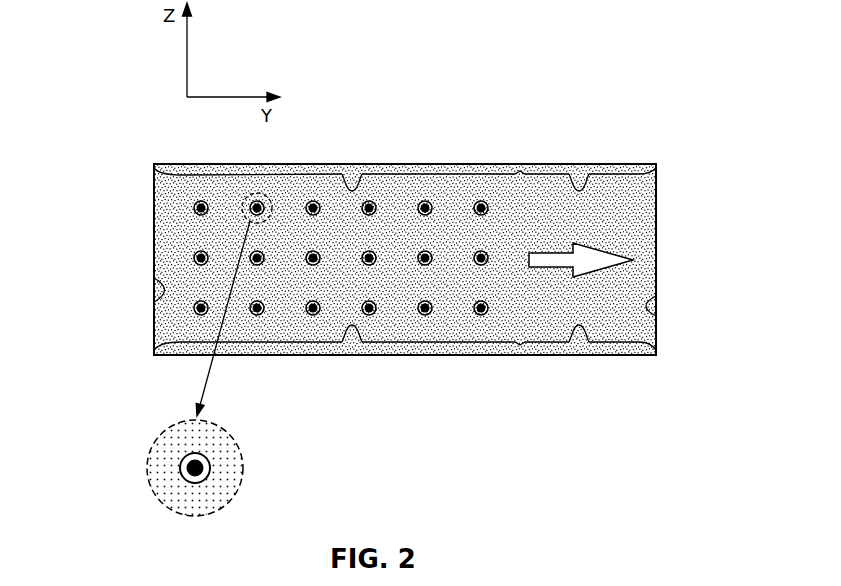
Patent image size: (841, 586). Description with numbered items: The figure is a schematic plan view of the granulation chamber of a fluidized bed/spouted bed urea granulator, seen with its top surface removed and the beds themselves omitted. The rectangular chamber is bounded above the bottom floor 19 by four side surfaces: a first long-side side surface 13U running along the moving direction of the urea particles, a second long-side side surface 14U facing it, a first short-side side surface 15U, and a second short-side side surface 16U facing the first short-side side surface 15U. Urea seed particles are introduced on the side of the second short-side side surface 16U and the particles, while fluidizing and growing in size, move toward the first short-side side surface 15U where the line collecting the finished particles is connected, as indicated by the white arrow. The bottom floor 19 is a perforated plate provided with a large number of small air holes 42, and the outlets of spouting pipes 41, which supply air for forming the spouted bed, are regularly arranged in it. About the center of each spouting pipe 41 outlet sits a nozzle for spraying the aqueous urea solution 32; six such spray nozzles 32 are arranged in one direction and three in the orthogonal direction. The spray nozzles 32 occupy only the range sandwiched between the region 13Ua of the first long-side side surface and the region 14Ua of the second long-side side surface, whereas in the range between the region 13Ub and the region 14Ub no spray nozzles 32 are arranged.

The first long-side side surface 13U is at (597, 118).
The region of the first long-side side surface 13Ua is at (349, 183).
The region of the first long-side side surface 13Ub is at (573, 182).
The second long-side side surface 14U is at (593, 398).
The region of the second long-side side surface 14Ua is at (348, 332).
The region of the second long-side side surface 14Ub is at (575, 332).
The first short-side side surface 15U is at (650, 310).
The second short-side side surface 16U is at (154, 297).
The bottom floor 19 is at (172, 227).
The nozzle for spraying the aqueous urea solution 32 is at (193, 258).
The spouting pipe 41 is at (192, 202).
The small air hole 42 is at (623, 202).